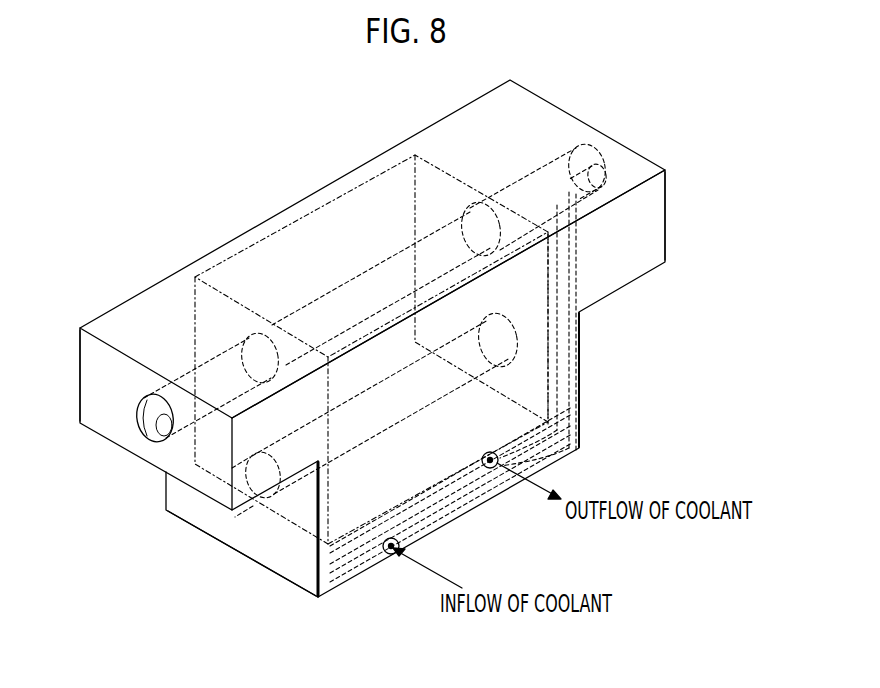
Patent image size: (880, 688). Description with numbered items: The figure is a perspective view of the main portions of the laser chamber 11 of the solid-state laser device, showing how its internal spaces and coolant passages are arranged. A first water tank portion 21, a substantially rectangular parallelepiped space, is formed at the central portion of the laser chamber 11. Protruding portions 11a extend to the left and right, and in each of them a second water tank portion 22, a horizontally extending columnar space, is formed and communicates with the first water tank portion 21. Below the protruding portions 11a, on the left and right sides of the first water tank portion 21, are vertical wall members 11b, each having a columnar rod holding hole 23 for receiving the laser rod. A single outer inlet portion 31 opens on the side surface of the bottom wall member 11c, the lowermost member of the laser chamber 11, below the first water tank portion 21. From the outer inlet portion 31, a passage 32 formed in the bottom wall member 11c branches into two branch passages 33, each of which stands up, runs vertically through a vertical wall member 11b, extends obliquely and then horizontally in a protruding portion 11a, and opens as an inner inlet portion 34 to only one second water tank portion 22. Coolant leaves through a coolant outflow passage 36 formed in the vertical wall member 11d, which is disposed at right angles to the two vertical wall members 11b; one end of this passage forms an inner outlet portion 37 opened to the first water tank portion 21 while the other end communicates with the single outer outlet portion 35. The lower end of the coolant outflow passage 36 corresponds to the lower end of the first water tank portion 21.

The laser chamber 11 is at (141, 187).
The protruding portion 11a is at (78, 331).
The vertical wall member 11b is at (297, 518).
The bottom wall member 11c is at (297, 588).
The vertical wall member 11d is at (447, 456).
The first water tank portion 21 is at (313, 212).
The second water tank portion 22 is at (583, 156).
The rod holding hole 23 is at (262, 498).
The outer inlet portion 31 is at (401, 548).
The passage 32 is at (440, 526).
The branch passage 33 is at (505, 522).
The inner inlet portion 34 is at (608, 165).
The outer outlet portion 35 is at (498, 460).
The coolant outflow passage 36 is at (563, 445).
The inner outlet portion 37 is at (560, 412).